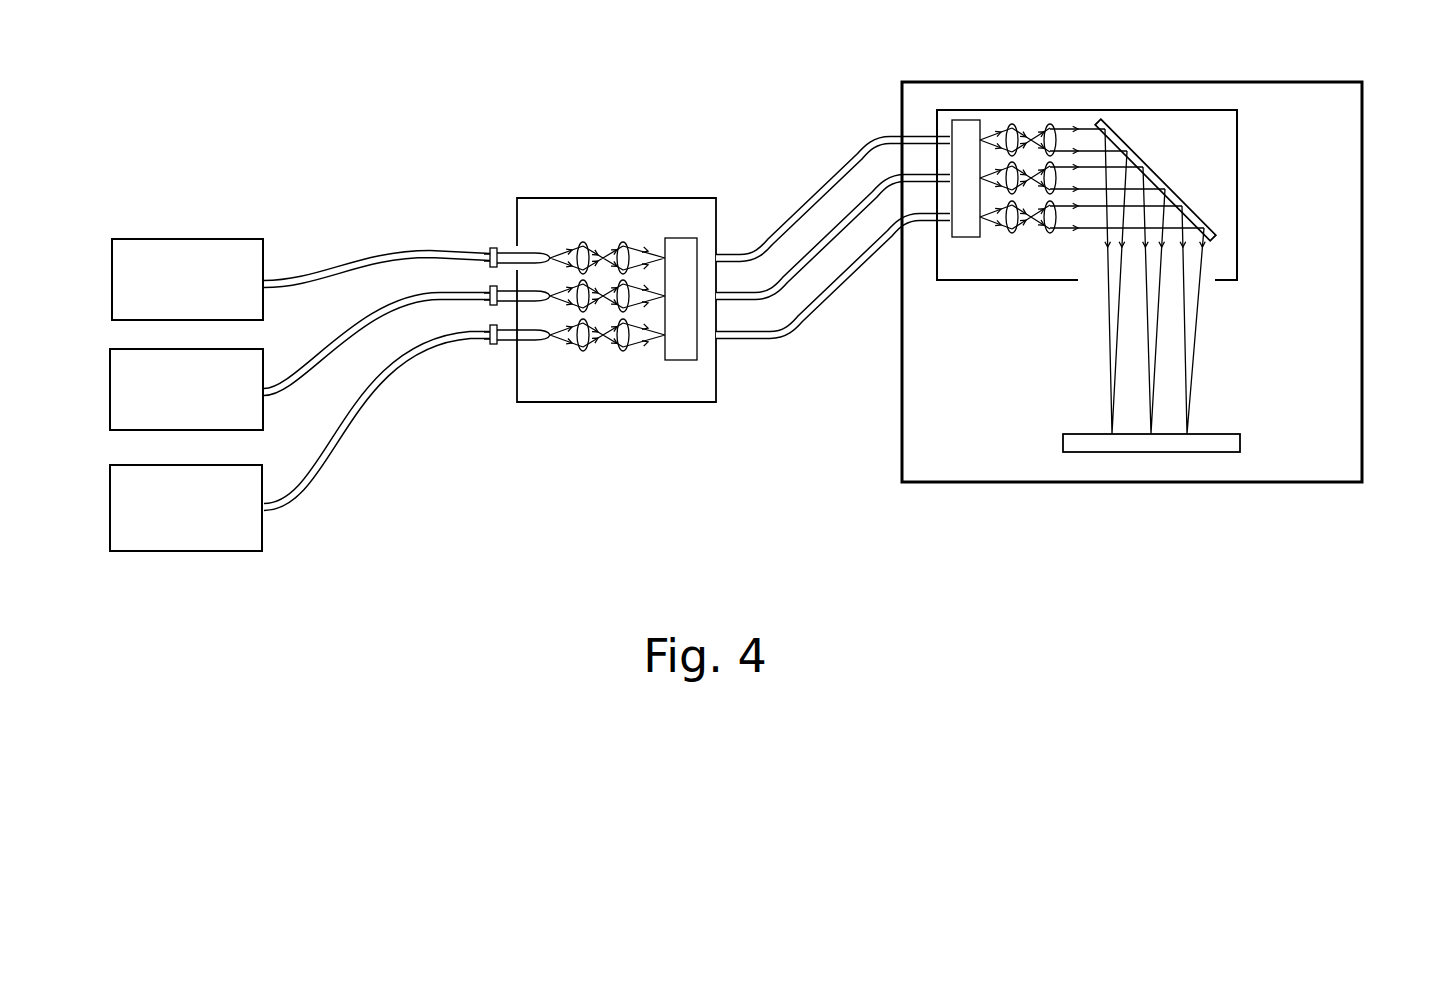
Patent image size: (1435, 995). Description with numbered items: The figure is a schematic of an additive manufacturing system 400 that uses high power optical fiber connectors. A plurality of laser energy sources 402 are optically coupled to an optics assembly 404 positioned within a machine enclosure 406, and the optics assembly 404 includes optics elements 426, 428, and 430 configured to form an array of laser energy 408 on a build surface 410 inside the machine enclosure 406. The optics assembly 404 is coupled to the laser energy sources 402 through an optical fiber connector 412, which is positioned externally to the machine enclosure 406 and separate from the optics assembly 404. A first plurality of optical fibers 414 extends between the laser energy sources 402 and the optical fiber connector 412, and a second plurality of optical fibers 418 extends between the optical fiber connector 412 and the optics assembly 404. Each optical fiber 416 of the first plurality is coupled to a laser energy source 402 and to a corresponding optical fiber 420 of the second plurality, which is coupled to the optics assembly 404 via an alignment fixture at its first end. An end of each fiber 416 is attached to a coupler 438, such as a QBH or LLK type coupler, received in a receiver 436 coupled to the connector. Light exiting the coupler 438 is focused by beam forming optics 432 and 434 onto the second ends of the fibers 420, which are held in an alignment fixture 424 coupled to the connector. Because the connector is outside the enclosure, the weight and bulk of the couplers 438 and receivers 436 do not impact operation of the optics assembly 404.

The additive manufacturing system 400 is at (474, 145).
The laser energy source 402 is at (215, 292).
The optics assembly 404 is at (1185, 110).
The machine enclosure 406 is at (1365, 112).
The array of laser energy 408 is at (1218, 326).
The build surface 410 is at (1225, 434).
The optical fiber connector 412 is at (617, 196).
The first plurality of optical fibers 414 is at (378, 442).
The optical fiber 416 is at (352, 272).
The second plurality of optical fibers 418 is at (831, 338).
The optical fiber 420 is at (770, 224).
The alignment fixture 424 is at (681, 362).
The optics element 426 is at (1011, 236).
The optics element 428 is at (1051, 236).
The optics element 430 is at (1215, 238).
The beam forming optics 432 is at (583, 352).
The beam forming optics 434 is at (620, 352).
The receiver 436 is at (500, 247).
The coupler 438 is at (491, 252).